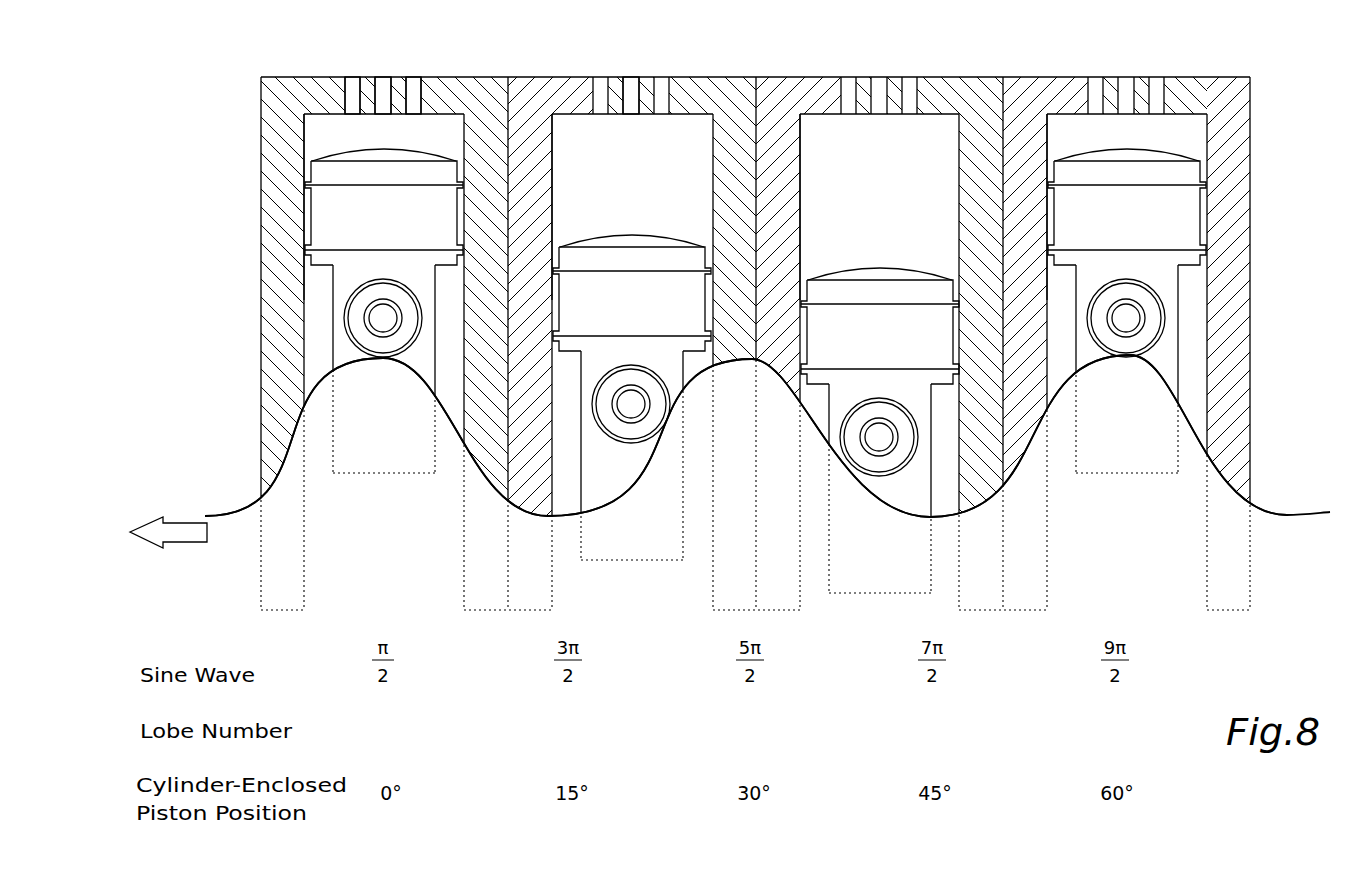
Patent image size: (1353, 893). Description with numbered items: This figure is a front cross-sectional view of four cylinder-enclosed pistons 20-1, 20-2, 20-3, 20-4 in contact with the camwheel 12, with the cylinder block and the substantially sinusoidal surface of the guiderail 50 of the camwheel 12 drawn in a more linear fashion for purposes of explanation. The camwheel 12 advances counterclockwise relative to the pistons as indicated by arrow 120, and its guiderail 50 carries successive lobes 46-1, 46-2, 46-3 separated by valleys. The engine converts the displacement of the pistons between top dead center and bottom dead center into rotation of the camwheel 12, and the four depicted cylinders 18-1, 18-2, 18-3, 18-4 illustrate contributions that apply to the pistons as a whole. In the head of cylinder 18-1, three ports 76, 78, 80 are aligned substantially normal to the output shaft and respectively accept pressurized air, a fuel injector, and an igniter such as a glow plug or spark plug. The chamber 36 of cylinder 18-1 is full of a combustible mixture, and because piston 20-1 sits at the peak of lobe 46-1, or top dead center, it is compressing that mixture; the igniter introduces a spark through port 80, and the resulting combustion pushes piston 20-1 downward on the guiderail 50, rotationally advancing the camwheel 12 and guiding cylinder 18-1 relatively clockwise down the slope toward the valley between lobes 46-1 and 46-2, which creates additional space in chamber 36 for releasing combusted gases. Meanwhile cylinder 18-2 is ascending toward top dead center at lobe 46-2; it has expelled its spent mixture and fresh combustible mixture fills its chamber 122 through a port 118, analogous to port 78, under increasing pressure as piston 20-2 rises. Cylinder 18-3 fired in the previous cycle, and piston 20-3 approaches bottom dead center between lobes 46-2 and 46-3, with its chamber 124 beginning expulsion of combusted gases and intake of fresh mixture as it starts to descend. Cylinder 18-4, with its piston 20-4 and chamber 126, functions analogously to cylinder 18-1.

The camwheel 12 is at (749, 548).
The guiderail 50 is at (252, 497).
The arrow 120 is at (188, 548).
The first port 76 is at (352, 84).
The second port 78 is at (383, 88).
The third port 80 is at (413, 86).
The port 118 is at (632, 88).
The cylinder 18-1 is at (450, 85).
The cylinder 18-2 is at (690, 85).
The cylinder 18-3 is at (940, 85).
The cylinder 18-4 is at (1190, 85).
The chamber 36 is at (305, 145).
The chamber 122 is at (554, 152).
The chamber 124 is at (801, 150).
The chamber 126 is at (1049, 146).
The cylinder-enclosed piston 20-1 is at (320, 213).
The cylinder-enclosed piston 20-2 is at (633, 243).
The cylinder-enclosed piston 20-3 is at (877, 277).
The cylinder-enclosed piston 20-4 is at (1195, 215).
The lobe 46-1 is at (376, 550).
The lobe 46-2 is at (739, 550).
The lobe 46-3 is at (1305, 447).